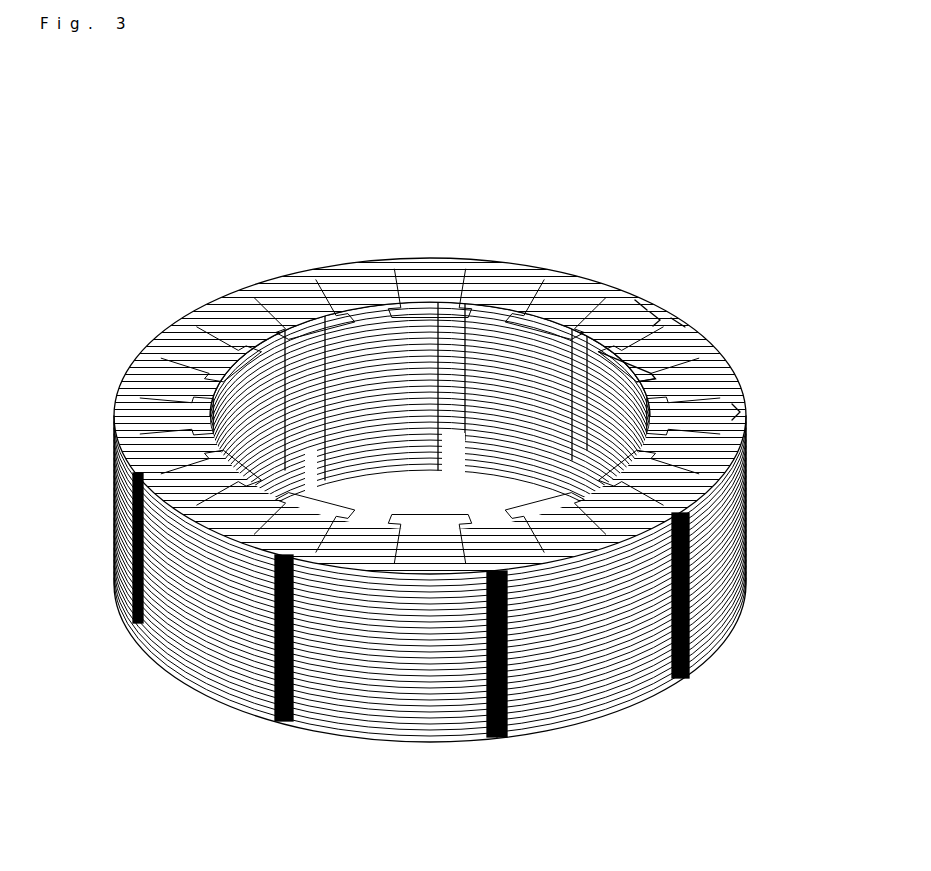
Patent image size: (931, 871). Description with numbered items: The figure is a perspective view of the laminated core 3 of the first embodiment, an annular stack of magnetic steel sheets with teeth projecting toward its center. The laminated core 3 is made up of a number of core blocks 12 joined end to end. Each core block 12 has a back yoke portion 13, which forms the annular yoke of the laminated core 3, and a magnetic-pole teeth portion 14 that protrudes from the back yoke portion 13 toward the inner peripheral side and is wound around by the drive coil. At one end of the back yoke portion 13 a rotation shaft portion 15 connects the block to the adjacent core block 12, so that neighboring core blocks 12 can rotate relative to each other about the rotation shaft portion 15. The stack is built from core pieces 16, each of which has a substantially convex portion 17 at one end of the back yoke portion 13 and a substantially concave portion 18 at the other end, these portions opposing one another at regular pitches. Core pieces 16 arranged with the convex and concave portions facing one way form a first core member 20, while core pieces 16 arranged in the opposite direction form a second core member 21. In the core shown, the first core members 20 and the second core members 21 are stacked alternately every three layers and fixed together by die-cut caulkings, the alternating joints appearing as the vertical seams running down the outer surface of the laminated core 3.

The laminated core 3 is at (573, 270).
The core block 12 is at (735, 468).
The back yoke portion 13 is at (710, 353).
The magnetic-pole teeth portion 14 is at (660, 368).
The rotation shaft portion 15 is at (660, 317).
The core piece 16 is at (680, 323).
The substantially convex portion 17 is at (647, 307).
The substantially concave portion 18 is at (740, 412).
The first core member 20 is at (117, 413).
The second core member 21 is at (486, 720).